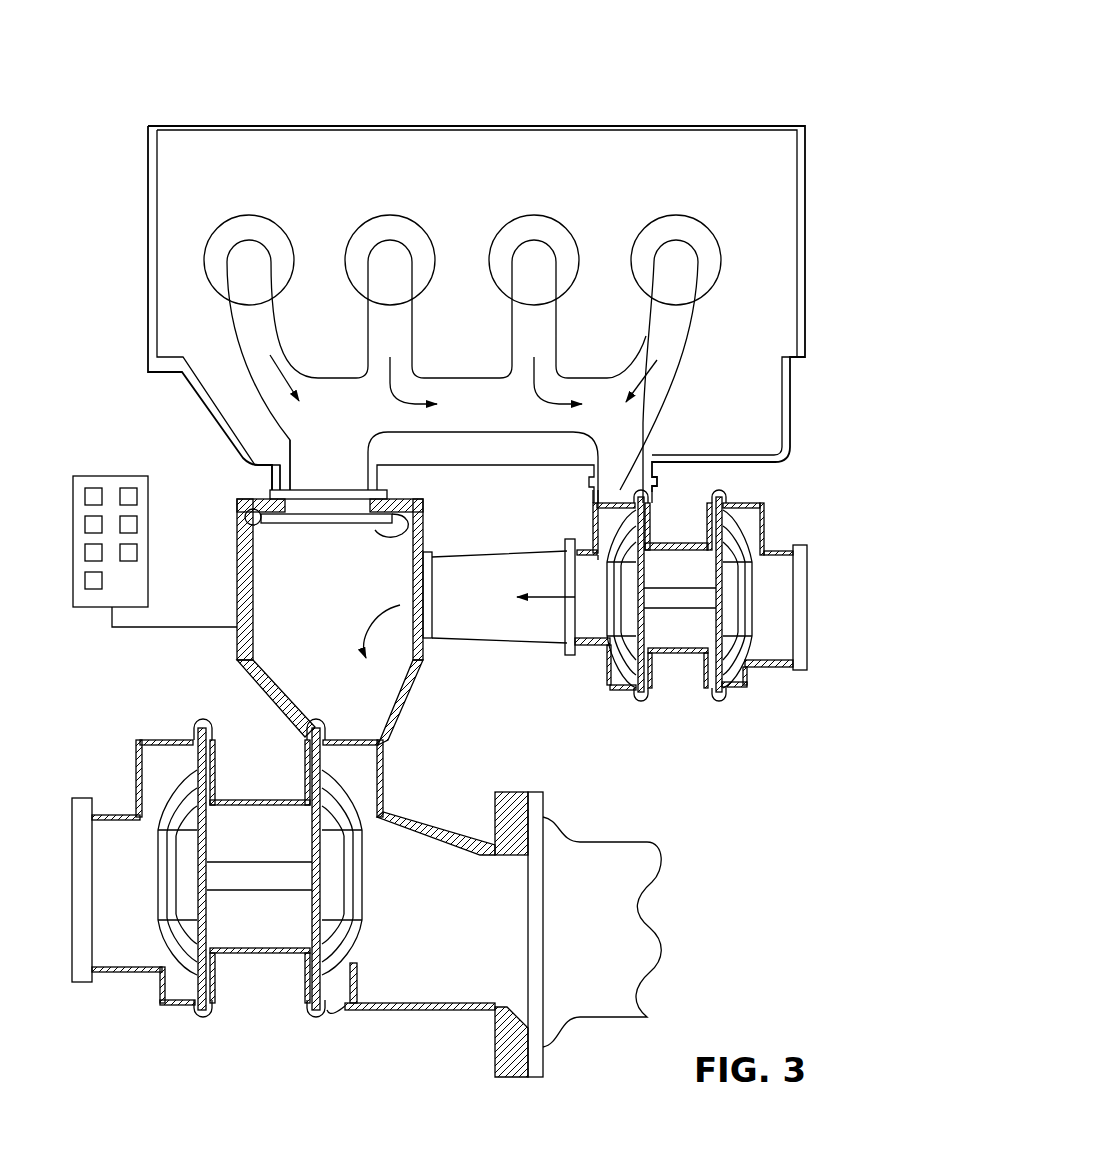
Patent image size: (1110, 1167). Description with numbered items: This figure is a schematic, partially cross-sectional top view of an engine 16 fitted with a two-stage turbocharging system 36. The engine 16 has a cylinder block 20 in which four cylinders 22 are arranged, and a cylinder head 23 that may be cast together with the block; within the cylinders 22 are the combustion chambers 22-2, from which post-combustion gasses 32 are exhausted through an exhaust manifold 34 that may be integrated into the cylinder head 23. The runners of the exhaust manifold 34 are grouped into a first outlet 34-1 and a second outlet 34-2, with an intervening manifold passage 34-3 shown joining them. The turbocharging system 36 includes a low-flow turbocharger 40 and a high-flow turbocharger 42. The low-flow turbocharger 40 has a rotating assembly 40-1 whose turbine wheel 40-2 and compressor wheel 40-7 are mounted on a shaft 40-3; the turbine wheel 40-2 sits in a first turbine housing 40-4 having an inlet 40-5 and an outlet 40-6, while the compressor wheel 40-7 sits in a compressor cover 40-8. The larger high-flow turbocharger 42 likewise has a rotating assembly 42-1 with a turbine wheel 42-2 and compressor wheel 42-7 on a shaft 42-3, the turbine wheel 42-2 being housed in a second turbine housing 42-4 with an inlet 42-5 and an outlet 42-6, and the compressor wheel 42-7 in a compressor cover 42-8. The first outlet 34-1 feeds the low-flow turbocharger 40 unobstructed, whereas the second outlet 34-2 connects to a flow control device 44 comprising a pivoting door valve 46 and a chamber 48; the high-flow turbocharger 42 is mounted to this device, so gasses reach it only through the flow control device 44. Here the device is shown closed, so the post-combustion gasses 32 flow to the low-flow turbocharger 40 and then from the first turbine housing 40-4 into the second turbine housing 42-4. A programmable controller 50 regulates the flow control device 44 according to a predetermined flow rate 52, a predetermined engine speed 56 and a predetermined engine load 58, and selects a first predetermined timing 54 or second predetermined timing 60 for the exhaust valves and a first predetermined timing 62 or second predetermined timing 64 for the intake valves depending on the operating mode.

The engine 16 is at (739, 92).
The cylinder block 20 is at (806, 317).
The cylinders 22 is at (273, 219).
The combustion chambers 22-2 is at (222, 234).
The cylinder head 23 is at (813, 222).
The post-combustion gasses 32 is at (395, 385).
The exhaust manifold 34 is at (700, 318).
The first outlet 34-1 is at (650, 430).
The second outlet 34-2 is at (327, 480).
The exhaust collector passage 34-3 is at (483, 467).
The turbocharging system 36 is at (714, 834).
The low-flow turbocharger 40 is at (661, 498).
The rotating assembly 40-1 is at (693, 628).
The turbine wheel 40-2 is at (620, 652).
The shaft 40-3 is at (693, 596).
The first turbine housing 40-4 is at (659, 520).
The inlet 40-5 is at (594, 522).
The outlet 40-6 is at (606, 525).
The compressor wheel 40-7 is at (745, 588).
The compressor cover 40-8 is at (737, 678).
The high-flow turbocharger 42 is at (237, 1012).
The rotating assembly 42-1 is at (255, 897).
The turbine wheel 42-2 is at (360, 880).
The shaft 42-3 is at (228, 868).
The second turbine housing 42-4 is at (340, 1008).
The inlet 42-5 is at (362, 768).
The outlet 42-6 is at (382, 935).
The compressor wheel 42-7 is at (170, 930).
The compressor cover 42-8 is at (152, 770).
The flow control device 44 is at (217, 656).
The valve 46 is at (414, 530).
The chamber 48 is at (306, 647).
The controller 50 is at (107, 476).
The predetermined flow rate 52 is at (137, 555).
The first predetermined timing 54 is at (137, 525).
The predetermined engine speed 56 is at (137, 496).
The predetermined engine load 58 is at (85, 496).
The second predetermined timing 60 is at (85, 524).
The first predetermined timing 62 is at (85, 552).
The second predetermined timing 64 is at (85, 580).